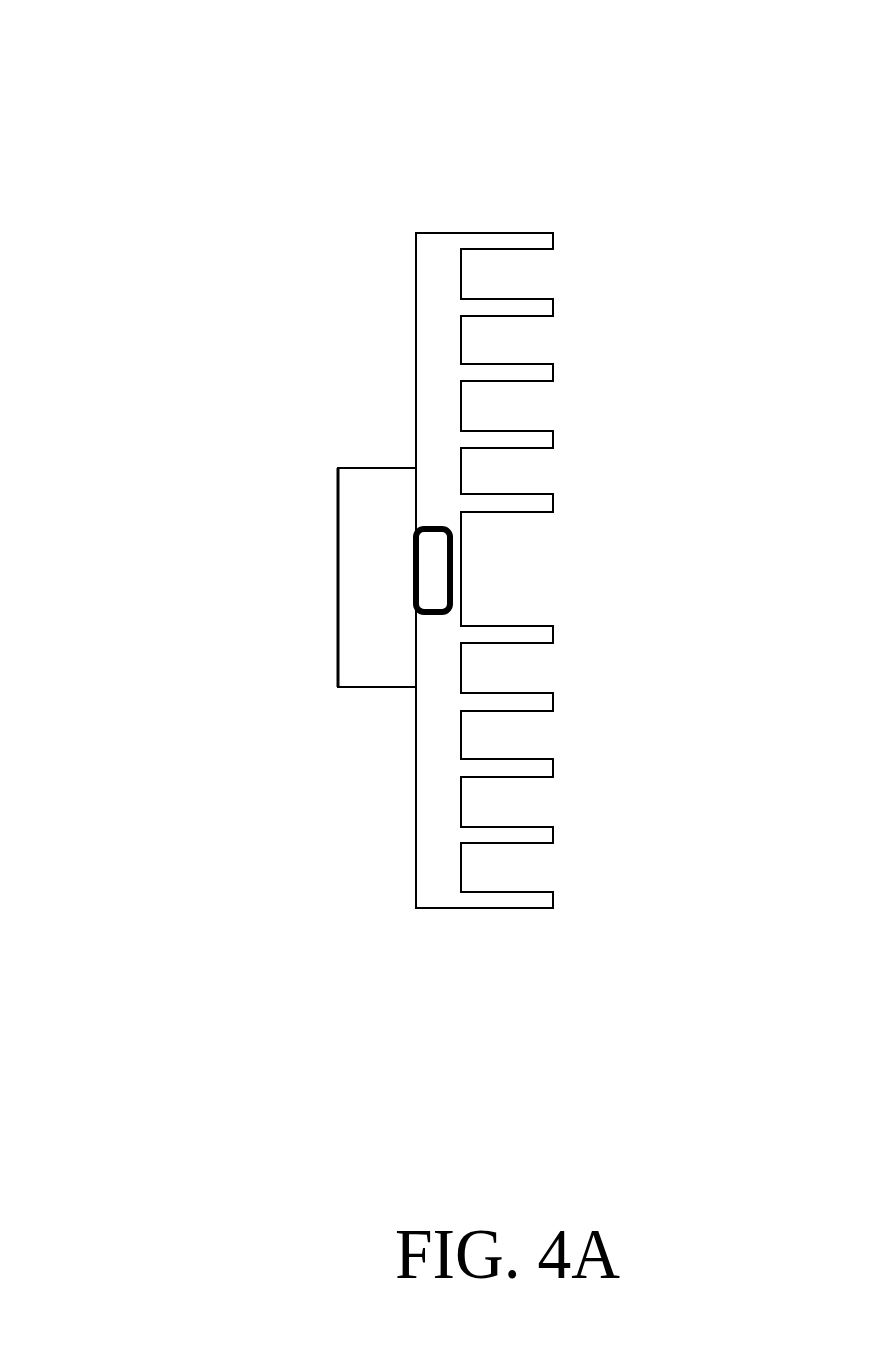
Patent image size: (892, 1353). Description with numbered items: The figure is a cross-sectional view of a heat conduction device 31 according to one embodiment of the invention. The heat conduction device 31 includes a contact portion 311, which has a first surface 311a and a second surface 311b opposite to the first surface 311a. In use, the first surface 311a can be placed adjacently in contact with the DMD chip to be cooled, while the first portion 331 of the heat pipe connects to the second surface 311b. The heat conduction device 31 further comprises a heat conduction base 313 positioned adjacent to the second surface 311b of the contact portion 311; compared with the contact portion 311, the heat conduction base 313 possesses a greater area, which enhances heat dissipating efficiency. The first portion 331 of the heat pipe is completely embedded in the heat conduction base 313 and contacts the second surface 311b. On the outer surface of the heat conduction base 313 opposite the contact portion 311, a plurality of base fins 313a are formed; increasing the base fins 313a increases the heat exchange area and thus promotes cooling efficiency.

The heat conduction device 31 is at (400, 155).
The contact portion 311 is at (379, 482).
The first surface 311a is at (338, 572).
The second surface 311b is at (417, 658).
The heat conduction base 313 is at (430, 795).
The base fin 313a is at (543, 843).
The first portion of the heat pipe 331 is at (453, 575).